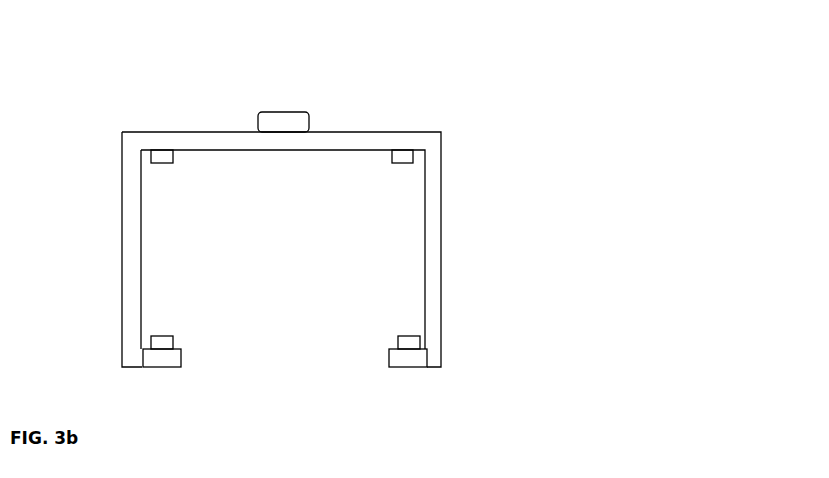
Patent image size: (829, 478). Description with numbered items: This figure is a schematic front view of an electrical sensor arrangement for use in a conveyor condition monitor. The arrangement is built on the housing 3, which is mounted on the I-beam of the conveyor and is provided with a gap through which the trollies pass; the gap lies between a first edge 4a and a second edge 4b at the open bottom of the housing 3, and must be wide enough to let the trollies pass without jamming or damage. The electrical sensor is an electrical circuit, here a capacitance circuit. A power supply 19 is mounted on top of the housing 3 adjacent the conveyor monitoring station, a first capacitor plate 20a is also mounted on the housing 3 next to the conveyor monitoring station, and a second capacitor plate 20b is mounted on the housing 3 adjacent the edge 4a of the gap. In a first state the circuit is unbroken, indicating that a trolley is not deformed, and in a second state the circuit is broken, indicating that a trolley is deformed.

The housing 3 is at (441, 210).
The power supply 19 is at (293, 112).
The first capacitor plate 20a is at (392, 158).
The second capacitor plate 20b is at (408, 336).
The first edge 4a is at (167, 378).
The second edge 4b is at (394, 376).